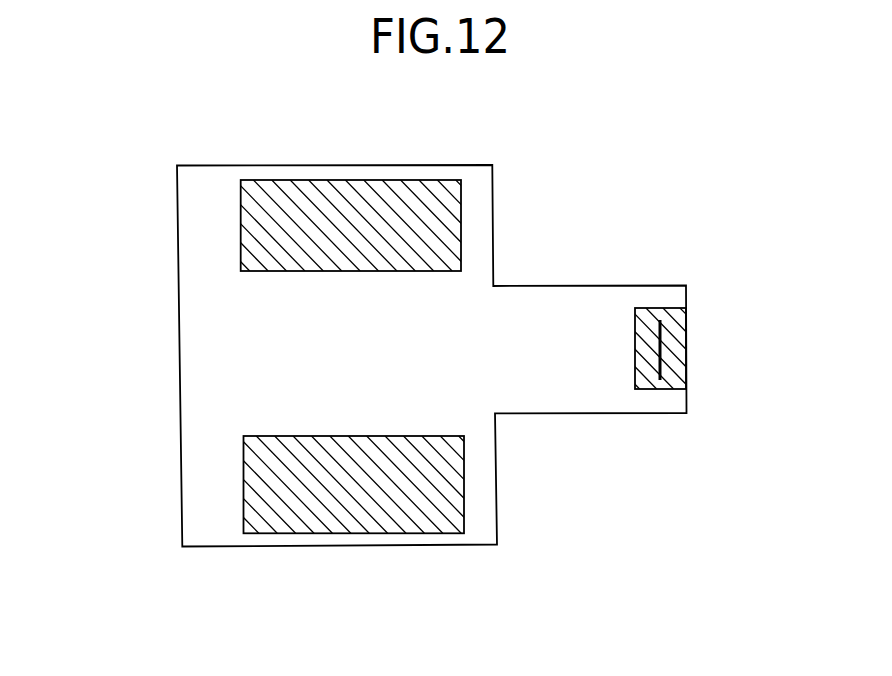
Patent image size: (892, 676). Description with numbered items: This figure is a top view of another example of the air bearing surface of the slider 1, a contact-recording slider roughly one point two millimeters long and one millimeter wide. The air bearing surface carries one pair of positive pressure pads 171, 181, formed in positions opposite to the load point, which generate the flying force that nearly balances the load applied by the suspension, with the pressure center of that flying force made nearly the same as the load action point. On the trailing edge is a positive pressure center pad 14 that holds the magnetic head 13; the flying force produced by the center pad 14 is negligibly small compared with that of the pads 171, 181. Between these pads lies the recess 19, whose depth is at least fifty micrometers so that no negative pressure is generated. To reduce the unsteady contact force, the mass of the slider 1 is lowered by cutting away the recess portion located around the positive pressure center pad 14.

The slider 1 is at (160, 222).
The recess 19 is at (365, 355).
The positive pressure pad 171 is at (382, 192).
The positive pressure pad 181 is at (388, 518).
The positive pressure center pad 14 is at (673, 330).
The magnetic head 13 is at (662, 367).